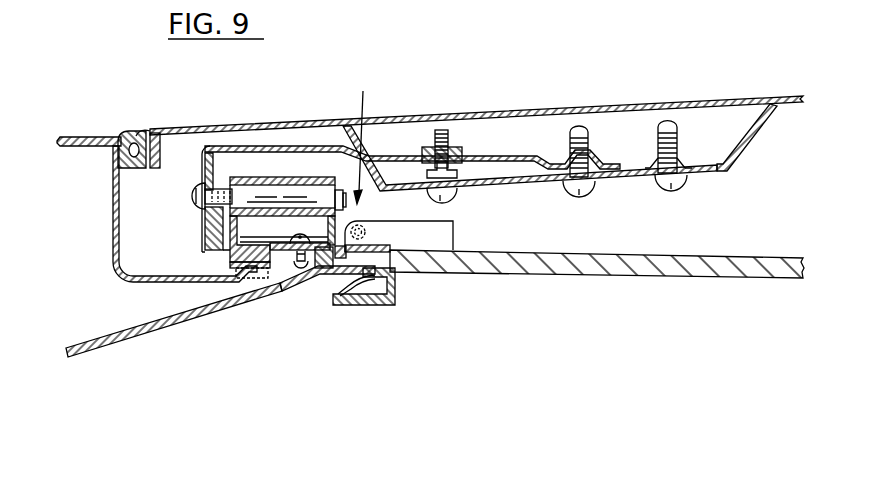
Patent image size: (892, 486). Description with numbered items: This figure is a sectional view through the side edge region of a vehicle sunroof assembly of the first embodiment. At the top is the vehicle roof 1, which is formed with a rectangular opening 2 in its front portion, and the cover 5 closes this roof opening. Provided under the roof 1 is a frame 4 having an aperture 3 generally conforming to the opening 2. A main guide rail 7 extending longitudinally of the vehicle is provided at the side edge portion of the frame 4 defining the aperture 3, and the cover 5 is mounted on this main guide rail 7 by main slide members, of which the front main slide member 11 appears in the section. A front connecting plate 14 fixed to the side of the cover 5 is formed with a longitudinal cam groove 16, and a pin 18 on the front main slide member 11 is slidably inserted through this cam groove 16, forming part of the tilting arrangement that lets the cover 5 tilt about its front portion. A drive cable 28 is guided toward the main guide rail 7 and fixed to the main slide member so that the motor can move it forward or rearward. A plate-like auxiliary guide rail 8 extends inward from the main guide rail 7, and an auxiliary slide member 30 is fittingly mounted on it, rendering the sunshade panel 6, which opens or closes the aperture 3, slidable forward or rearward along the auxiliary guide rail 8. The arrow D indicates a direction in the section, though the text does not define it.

The vehicle roof 1 is at (84, 138).
The rectangular opening 2 is at (130, 132).
The cover 5 is at (571, 108).
The front connecting plate 14 is at (216, 232).
The cam groove 16 is at (221, 195).
The front main slide member 11 is at (281, 178).
The pin 18 is at (314, 192).
The main guide rail 7 is at (268, 279).
The drive cable 28 is at (328, 268).
The auxiliary guide rail 8 is at (388, 233).
The auxiliary slide member 30 is at (441, 238).
The aperture 3 is at (396, 285).
The sunshade panel 6 is at (632, 262).
The frame 4 is at (147, 328).
The direction arrow D is at (363, 134).